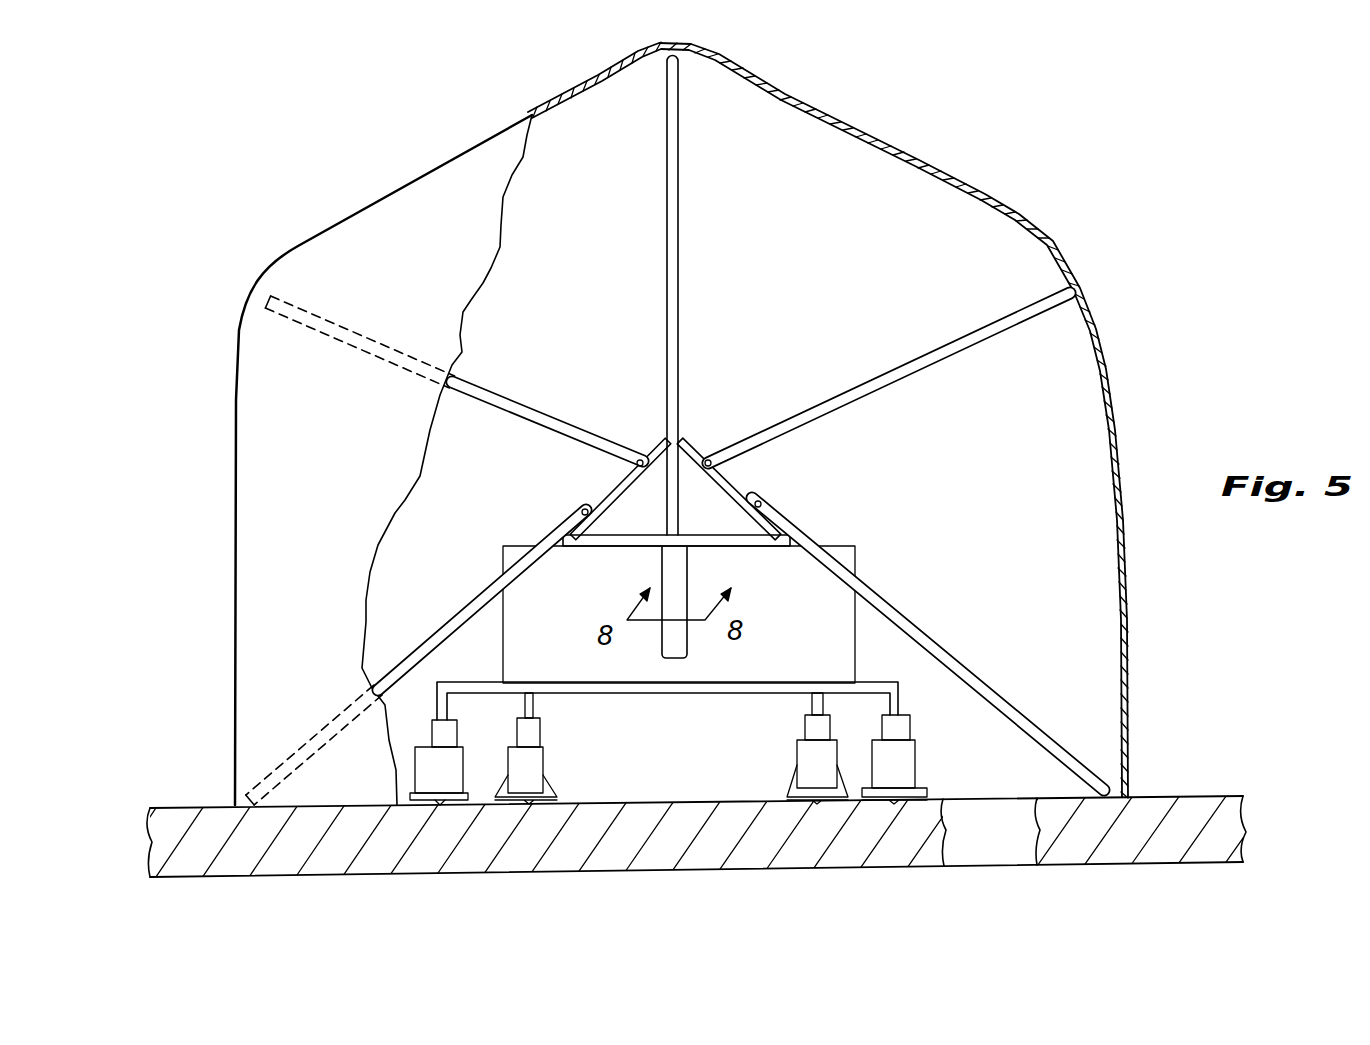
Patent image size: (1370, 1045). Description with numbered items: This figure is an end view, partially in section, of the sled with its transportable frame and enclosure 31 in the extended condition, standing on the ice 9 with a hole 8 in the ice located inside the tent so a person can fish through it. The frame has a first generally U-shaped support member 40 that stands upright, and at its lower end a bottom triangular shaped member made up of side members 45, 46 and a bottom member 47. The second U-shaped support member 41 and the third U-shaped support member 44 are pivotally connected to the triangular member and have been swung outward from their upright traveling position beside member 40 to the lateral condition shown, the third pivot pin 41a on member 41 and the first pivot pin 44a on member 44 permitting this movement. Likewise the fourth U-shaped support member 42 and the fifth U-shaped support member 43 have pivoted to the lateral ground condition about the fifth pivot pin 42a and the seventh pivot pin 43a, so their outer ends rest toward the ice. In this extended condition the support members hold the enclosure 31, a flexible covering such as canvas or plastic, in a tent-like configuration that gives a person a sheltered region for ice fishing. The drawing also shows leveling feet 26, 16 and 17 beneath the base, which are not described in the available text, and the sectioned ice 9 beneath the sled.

The hole 8 is at (1037, 825).
The ice 9 is at (1158, 812).
The leveling foot 16 is at (797, 758).
The leveling foot 17 is at (917, 758).
The leveling feet 26 is at (465, 757).
The enclosure 31 is at (1127, 582).
The first U-shaped support member 40 is at (678, 197).
The second U-shaped support member 41 is at (887, 378).
The third pivot pin 41a is at (708, 460).
The fourth U-shaped support member 42 is at (908, 621).
The fifth pivot pin 42a is at (770, 511).
The fifth U-shaped support member 43 is at (455, 624).
The seventh pivot pin 43a is at (580, 508).
The third U-shaped support member 44 is at (466, 380).
The first pivot pin 44a is at (632, 457).
The side member 45 is at (736, 482).
The side member 46 is at (600, 485).
The bottom member 47 is at (598, 542).